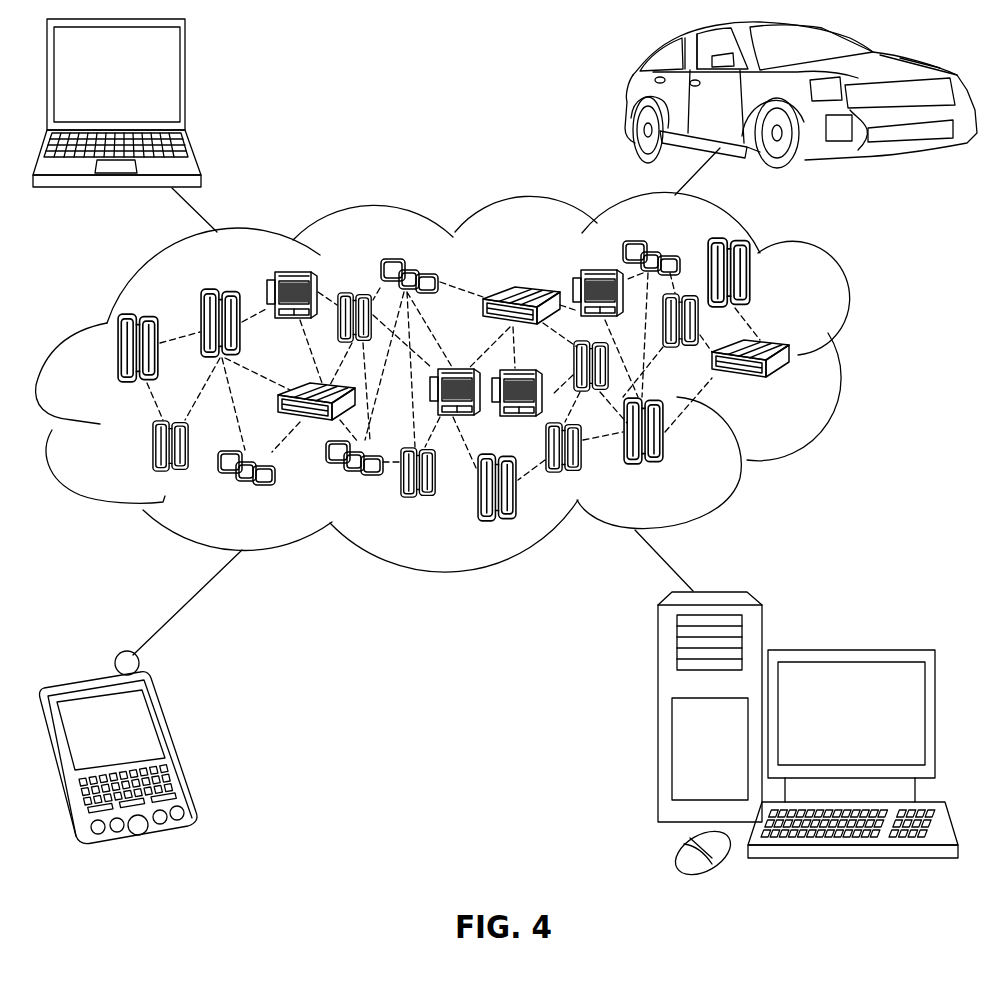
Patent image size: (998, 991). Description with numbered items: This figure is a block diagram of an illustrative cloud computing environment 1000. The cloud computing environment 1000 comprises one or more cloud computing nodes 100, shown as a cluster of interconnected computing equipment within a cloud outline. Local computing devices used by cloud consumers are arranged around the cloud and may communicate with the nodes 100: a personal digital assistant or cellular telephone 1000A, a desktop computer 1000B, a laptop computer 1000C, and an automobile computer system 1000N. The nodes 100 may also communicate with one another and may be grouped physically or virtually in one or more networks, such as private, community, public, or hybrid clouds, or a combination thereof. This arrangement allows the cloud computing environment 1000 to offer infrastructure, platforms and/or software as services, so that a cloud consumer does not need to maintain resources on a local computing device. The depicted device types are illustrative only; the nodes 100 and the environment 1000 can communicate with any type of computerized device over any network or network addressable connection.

The cloud computing nodes 100 is at (794, 388).
The cloud computing environment 1000 is at (850, 357).
The personal digital assistant or cellular telephone 1000A is at (177, 745).
The desktop computer 1000B is at (850, 648).
The laptop computer 1000C is at (187, 82).
The automobile computer system 1000N is at (630, 100).